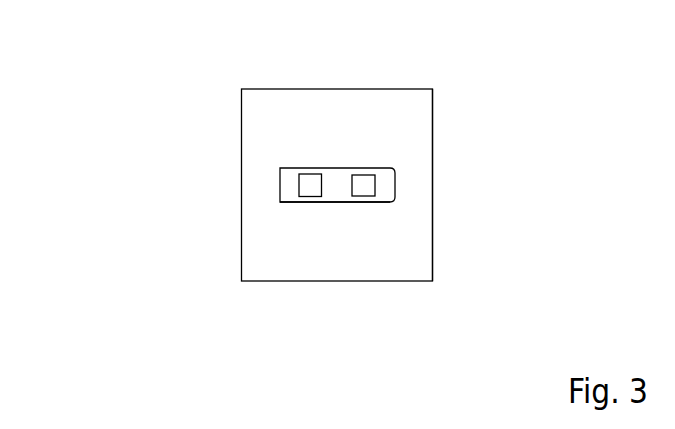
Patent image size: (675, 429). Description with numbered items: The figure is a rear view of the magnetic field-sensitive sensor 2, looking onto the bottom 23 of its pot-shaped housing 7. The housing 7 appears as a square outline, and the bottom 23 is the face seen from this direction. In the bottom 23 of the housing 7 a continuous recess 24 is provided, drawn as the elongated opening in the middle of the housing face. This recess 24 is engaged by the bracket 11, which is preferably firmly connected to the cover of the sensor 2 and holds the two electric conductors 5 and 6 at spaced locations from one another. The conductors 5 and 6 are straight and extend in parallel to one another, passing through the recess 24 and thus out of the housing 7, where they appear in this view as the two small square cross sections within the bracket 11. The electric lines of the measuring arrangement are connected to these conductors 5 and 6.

The magnetic field-sensitive sensor 2 is at (108, 58).
The bottom of housing 23 is at (270, 127).
The housing 7 is at (425, 143).
The bracket 11 is at (288, 175).
The electric conductor 6 is at (311, 182).
The electric conductor 5 is at (363, 182).
The continuous recess 24 is at (343, 202).